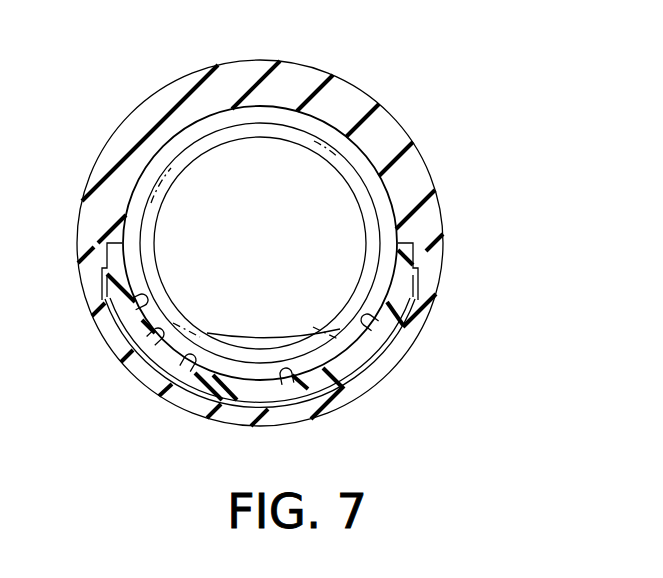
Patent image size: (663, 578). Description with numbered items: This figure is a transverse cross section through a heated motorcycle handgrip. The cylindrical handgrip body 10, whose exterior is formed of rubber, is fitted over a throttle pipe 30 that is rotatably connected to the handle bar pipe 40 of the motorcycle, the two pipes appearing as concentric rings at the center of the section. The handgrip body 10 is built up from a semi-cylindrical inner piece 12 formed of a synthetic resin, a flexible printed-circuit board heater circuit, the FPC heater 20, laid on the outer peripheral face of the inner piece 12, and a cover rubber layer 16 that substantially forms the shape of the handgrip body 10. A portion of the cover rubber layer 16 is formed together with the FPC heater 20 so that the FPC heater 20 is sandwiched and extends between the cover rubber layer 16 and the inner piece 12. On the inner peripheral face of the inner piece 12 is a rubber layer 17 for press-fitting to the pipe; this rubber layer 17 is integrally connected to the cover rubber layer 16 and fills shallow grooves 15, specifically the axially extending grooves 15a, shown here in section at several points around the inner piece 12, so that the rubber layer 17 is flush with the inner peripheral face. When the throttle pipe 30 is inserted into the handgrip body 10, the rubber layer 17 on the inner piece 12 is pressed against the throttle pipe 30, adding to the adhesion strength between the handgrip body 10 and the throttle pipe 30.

The handgrip body 10 is at (297, 50).
The cover rubber layer 16 is at (150, 108).
The handle bar pipe 40 is at (353, 158).
The throttle pipe 30 is at (396, 188).
The semi-cylindrical inner piece 12 is at (348, 373).
The FPC heater 20 is at (393, 372).
The shallow grooves 15a is at (138, 300).
The tab 15 is at (186, 368).
The rubber layer 17 is at (163, 338).